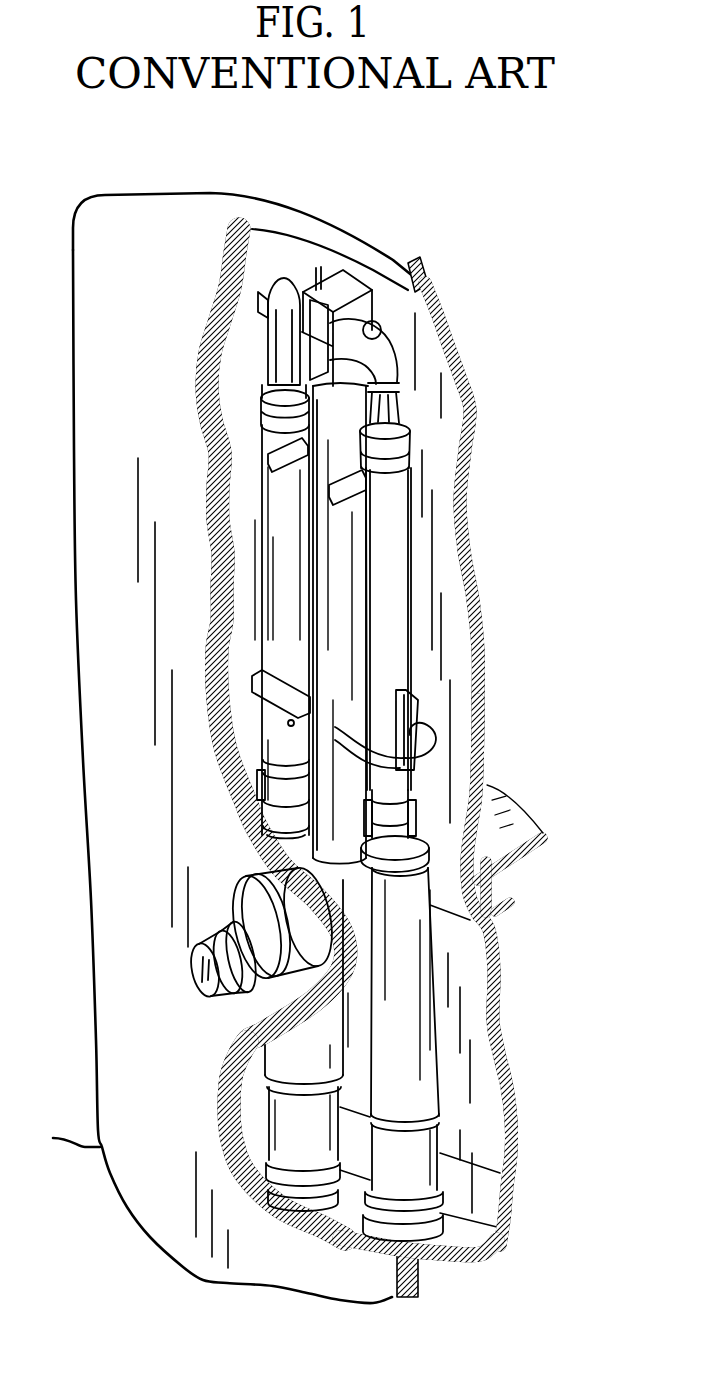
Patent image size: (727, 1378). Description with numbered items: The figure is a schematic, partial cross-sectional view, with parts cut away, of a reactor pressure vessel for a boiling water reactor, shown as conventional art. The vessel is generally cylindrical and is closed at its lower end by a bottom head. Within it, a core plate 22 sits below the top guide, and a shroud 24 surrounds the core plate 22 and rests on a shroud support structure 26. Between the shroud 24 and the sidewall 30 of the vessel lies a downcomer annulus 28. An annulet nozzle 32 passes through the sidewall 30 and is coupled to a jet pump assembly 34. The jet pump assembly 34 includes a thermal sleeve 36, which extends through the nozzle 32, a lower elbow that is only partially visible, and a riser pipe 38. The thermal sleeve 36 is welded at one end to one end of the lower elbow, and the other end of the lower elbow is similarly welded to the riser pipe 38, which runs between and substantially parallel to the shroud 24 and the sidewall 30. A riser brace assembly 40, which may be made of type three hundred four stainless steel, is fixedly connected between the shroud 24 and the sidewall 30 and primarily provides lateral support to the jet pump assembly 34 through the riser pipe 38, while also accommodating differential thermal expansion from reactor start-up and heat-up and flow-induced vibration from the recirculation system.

The core plate 22 is at (520, 813).
The shroud 24 is at (460, 728).
The shroud support structure 26 is at (510, 1205).
The downcomer annulus 28 is at (447, 556).
The sidewall 30 is at (222, 1103).
The annulet nozzle 32 is at (233, 917).
The jet pump assembly 34 is at (252, 630).
The thermal sleeve 36 is at (192, 969).
The riser pipe 38 is at (305, 566).
The riser brace assembly 40 is at (268, 462).